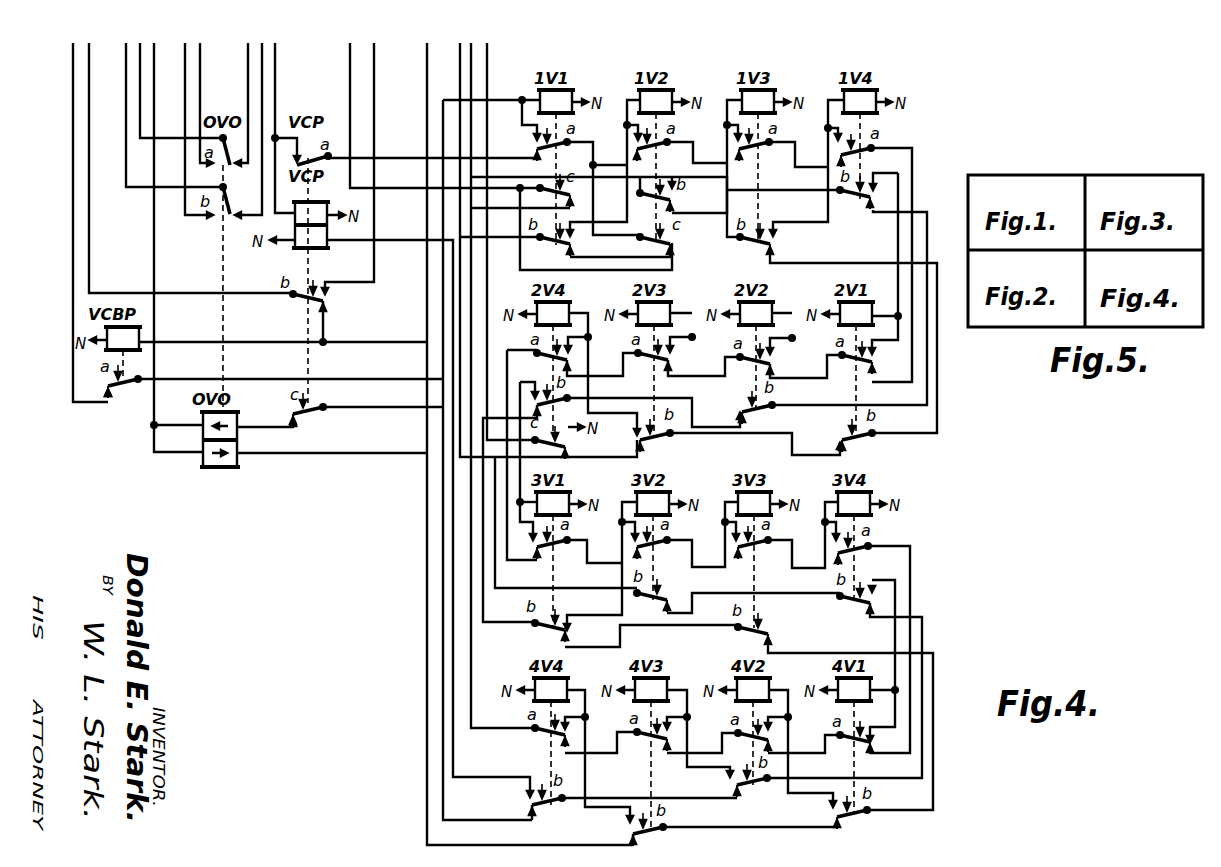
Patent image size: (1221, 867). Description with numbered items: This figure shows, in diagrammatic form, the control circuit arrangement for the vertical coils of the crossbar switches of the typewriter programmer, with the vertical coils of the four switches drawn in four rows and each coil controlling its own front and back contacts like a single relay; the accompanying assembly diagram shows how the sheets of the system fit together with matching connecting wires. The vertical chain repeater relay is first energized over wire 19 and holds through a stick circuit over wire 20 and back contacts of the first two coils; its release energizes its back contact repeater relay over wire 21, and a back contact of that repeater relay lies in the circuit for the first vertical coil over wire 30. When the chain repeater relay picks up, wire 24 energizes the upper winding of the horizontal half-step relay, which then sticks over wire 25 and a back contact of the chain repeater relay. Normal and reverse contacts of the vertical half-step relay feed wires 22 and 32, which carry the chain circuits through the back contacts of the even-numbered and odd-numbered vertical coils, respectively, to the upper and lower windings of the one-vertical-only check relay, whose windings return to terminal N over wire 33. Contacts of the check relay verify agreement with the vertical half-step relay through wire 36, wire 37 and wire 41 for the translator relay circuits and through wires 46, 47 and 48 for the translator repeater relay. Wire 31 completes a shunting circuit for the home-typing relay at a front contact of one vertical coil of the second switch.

The wire 30 is at (73, 50).
The wire 21 is at (89, 50).
The wire 47 is at (126, 73).
The wire 37 is at (140, 96).
The wire 33 is at (154, 96).
The wire 46 is at (185, 50).
The wire 41 is at (200, 73).
The wire 48 is at (248, 50).
The wire 36 is at (262, 73).
The wire 19 is at (275, 50).
The wire 20 is at (350, 75).
The wire 24 is at (374, 50).
The wire 25 is at (427, 75).
The wire 22 is at (460, 50).
The wire 32 is at (471, 75).
The wire 31 is at (487, 50).